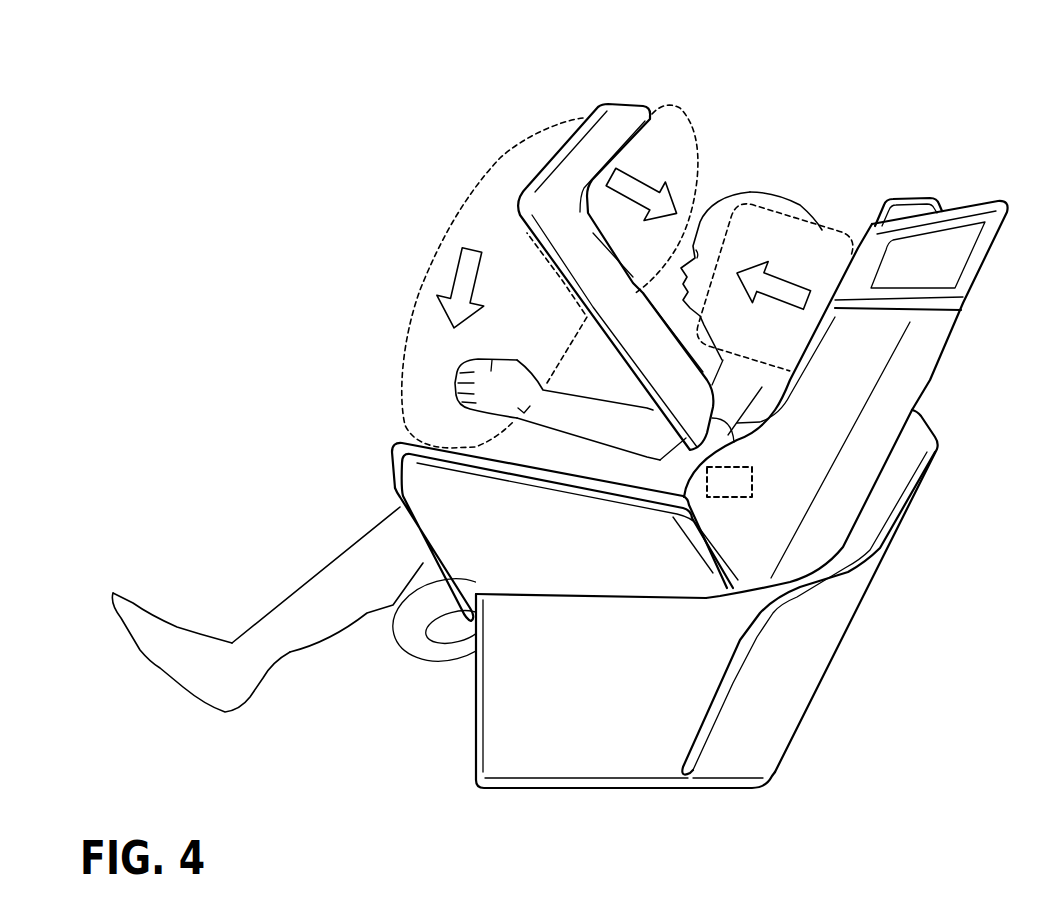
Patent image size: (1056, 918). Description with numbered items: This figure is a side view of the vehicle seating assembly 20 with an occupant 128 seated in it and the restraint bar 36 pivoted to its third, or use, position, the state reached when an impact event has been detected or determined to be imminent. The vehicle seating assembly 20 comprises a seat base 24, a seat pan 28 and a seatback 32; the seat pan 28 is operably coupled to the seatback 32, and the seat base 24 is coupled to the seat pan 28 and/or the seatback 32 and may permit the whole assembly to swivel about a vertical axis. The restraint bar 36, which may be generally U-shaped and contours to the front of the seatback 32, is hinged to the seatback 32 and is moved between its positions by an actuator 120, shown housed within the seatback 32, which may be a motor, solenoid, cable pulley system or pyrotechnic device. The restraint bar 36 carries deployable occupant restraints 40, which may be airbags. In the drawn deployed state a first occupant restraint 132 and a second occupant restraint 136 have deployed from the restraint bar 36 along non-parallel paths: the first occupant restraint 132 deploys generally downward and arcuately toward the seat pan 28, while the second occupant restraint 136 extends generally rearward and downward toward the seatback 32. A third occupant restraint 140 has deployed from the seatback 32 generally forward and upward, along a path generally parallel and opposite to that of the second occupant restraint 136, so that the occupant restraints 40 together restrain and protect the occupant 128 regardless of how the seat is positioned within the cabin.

The vehicle seating assembly 20 is at (261, 201).
The seat base 24 is at (607, 789).
The seat pan 28 is at (396, 444).
The seatback 32 is at (930, 379).
The restraint bar 36 is at (617, 106).
The deployable occupant restraint 40 is at (455, 212).
The actuator 120 is at (755, 478).
The occupant 128 is at (758, 190).
The first occupant restraint 132 is at (442, 242).
The second occupant restraint 136 is at (665, 116).
The third occupant restraint 140 is at (857, 208).